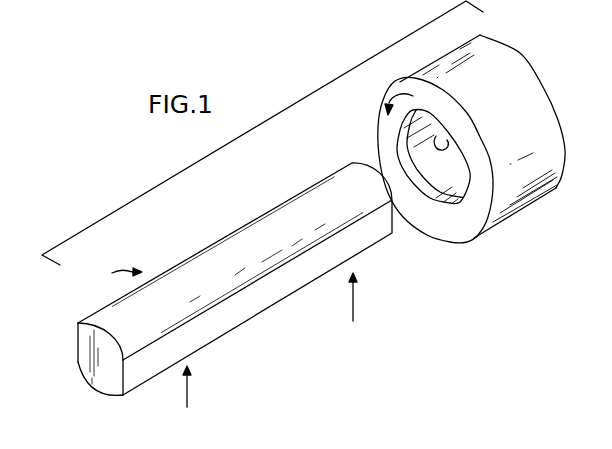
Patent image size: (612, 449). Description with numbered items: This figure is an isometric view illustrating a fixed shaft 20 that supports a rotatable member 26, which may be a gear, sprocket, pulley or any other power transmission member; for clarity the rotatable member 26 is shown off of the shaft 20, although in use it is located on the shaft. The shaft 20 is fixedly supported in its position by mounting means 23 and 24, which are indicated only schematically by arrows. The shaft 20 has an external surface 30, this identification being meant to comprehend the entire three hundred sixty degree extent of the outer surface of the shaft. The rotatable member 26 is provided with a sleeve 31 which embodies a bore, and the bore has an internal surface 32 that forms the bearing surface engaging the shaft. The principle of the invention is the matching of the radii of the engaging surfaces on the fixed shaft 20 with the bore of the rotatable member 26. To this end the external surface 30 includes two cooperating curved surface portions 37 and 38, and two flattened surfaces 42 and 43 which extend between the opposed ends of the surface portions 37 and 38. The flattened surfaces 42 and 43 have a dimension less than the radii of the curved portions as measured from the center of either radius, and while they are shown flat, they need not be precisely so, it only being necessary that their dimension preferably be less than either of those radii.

The shaft 20 is at (111, 280).
The mounting means 23 is at (188, 398).
The mounting means 24 is at (356, 311).
The rotatable member 26 is at (482, 53).
The external surface 30 is at (238, 260).
The sleeve 31 is at (402, 136).
The internal surface 32 is at (437, 136).
The second cooperating surface portion 37 is at (107, 333).
The second cooperating surface portion 38 is at (98, 393).
The flattened surface 42 is at (77, 338).
The flattened surface 43 is at (124, 375).